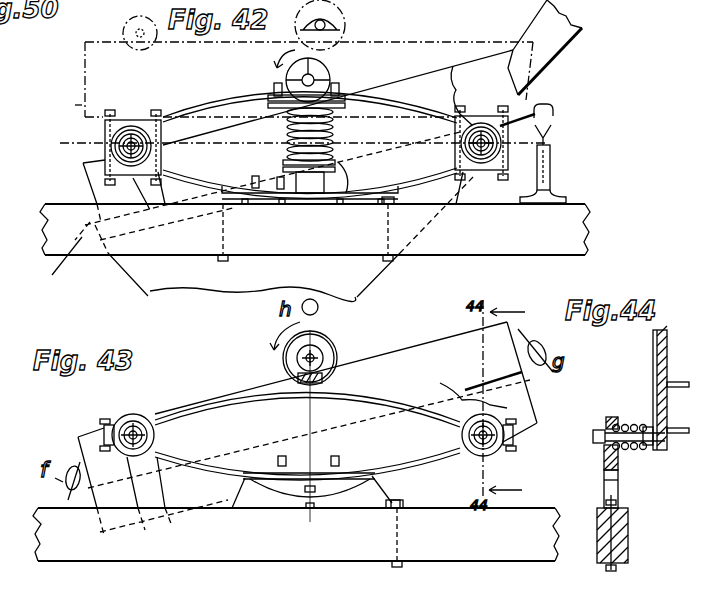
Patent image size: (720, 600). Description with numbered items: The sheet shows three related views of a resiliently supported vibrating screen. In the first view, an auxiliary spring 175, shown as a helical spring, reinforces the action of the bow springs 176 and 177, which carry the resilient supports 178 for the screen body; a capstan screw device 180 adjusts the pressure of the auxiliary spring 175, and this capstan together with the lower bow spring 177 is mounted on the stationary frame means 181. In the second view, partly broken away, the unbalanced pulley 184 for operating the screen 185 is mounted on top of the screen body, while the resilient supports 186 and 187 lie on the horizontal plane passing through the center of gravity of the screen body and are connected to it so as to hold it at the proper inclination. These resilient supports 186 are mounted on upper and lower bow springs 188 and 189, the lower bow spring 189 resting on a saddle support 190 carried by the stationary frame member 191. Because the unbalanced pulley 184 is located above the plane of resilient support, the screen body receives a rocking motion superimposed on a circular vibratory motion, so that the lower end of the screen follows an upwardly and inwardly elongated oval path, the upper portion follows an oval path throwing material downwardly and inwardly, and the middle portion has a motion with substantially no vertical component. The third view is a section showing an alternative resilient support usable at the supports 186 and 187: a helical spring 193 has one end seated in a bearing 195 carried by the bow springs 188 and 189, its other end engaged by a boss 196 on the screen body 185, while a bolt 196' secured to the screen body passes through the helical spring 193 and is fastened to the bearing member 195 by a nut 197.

In FIG. 42, the auxiliary spring 175 is at (286, 150).
In FIG. 42, the bow spring 176 is at (206, 106).
In FIG. 42, the lower bow spring 177 is at (215, 170).
In FIG. 42, the resilient supports 178 is at (105, 137).
In FIG. 42, the capstan screw device 180 is at (318, 199).
In FIG. 42, the stationary frame means 181 is at (315, 229).
In FIG. 43, the unbalanced pulley 184 is at (322, 347).
In FIG. 43, the screen 185 is at (346, 382).
In FIG. 44, the screen 185 is at (650, 367).
In FIG. 43, the resilient support 186 is at (126, 420).
In FIG. 43, the resilient support 187 is at (478, 455).
In FIG. 43, the upper bow spring 188 is at (215, 393).
In FIG. 43, the lower bow spring 189 is at (222, 470).
In FIG. 43, the saddle support 190 is at (386, 479).
In FIG. 43, the stationary frame member 191 is at (296, 533).
In FIG. 44, the helical spring 193 is at (636, 449).
In FIG. 44, the bearing 195 is at (603, 460).
In FIG. 44, the boss 196 is at (660, 446).
In FIG. 44, the bolt 196' is at (588, 423).
In FIG. 44, the nut 197 is at (600, 447).